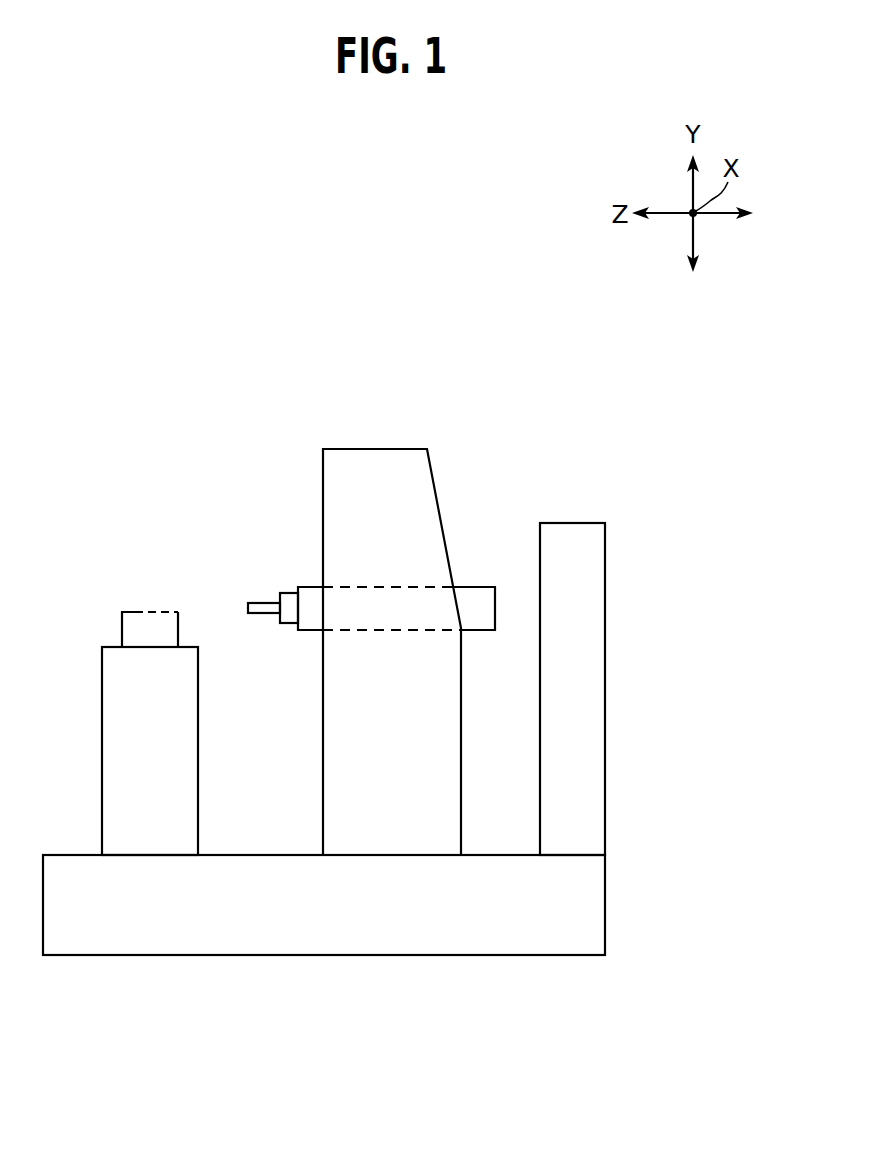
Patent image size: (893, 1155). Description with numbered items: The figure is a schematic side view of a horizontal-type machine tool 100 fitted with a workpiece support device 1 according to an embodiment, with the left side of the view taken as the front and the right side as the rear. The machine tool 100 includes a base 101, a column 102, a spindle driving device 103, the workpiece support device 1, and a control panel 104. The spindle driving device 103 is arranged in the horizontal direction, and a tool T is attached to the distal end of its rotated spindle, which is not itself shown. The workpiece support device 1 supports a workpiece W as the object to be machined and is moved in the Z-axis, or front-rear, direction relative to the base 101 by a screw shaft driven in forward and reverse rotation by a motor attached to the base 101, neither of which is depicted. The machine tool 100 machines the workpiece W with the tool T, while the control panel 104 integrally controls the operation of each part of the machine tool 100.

The workpiece support device 1 is at (102, 746).
The machine tool 100 is at (460, 374).
The base 101 is at (320, 932).
The column 102 is at (461, 710).
The spindle driving device 103 is at (303, 554).
The control panel 104 is at (572, 523).
The workpiece W is at (135, 610).
The tool T is at (265, 618).